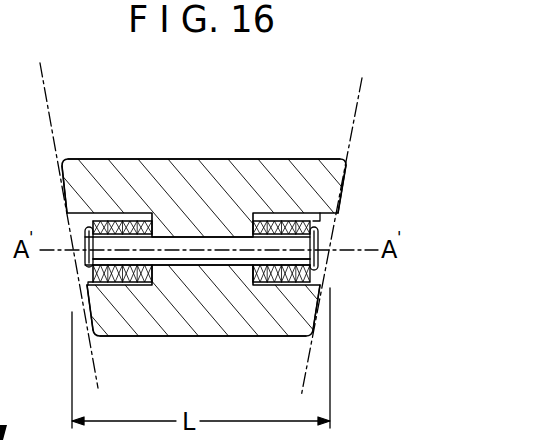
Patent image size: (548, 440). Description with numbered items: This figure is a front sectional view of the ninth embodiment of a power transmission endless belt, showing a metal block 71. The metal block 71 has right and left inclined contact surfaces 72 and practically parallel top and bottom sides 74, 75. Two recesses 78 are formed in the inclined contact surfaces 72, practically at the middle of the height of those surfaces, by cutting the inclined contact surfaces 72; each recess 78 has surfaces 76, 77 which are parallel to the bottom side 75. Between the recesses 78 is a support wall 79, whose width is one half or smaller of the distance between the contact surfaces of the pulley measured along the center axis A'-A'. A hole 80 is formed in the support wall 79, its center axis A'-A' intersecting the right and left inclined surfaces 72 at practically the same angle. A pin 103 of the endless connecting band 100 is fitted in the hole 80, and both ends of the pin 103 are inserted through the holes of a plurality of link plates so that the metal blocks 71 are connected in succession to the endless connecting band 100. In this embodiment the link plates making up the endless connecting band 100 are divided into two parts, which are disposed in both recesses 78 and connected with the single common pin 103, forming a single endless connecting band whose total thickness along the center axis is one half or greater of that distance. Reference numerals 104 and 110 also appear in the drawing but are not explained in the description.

The metal block 71 is at (157, 159).
The inclined contact surfaces 72 is at (62, 187).
The top side 74 is at (253, 159).
The bottom side 75 is at (247, 337).
The recess surface 76 is at (80, 217).
The recess surface 77 is at (137, 286).
The recesses 78 is at (89, 284).
The support wall 79 is at (230, 277).
The hole 80 is at (183, 258).
The endless connecting band 100 is at (81, 263).
The pin 103 is at (188, 242).
The retaining rings 104 is at (88, 236).
The cutting lines 110 is at (50, 108).